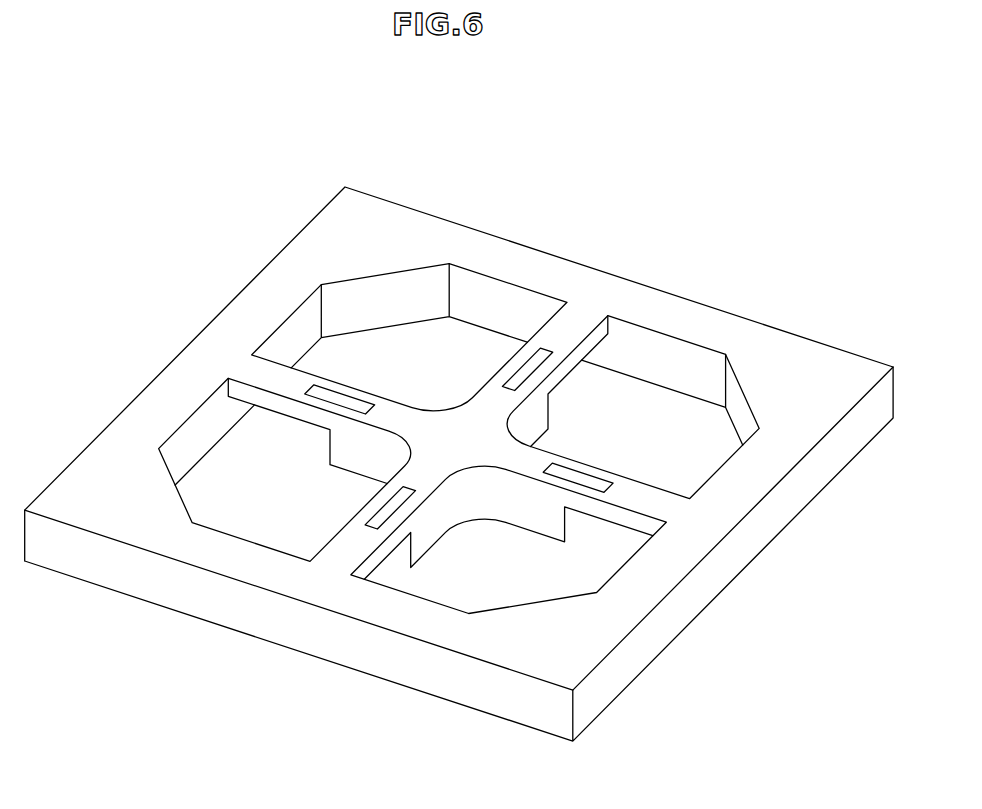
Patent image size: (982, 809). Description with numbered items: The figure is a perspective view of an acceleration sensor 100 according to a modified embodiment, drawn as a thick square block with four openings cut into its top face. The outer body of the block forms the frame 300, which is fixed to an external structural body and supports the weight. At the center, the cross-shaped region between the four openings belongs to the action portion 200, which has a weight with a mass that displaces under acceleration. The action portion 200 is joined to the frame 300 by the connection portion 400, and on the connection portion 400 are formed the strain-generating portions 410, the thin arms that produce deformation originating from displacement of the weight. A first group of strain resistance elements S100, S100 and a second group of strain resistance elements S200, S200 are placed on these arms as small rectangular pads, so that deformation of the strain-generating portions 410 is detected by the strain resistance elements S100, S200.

The acceleration sensor 100 is at (622, 116).
The action portion 200 is at (465, 430).
The frame 300 is at (255, 307).
The connection portion 400 is at (350, 450).
The strain-generating portions 410 is at (277, 377).
The first group of strain resistance elements S100 is at (345, 398).
The second group of strain resistance elements S200 is at (553, 352).